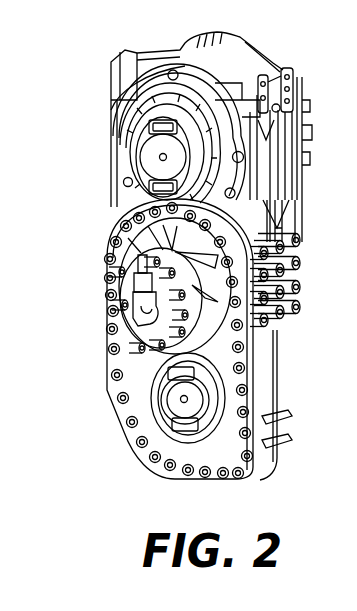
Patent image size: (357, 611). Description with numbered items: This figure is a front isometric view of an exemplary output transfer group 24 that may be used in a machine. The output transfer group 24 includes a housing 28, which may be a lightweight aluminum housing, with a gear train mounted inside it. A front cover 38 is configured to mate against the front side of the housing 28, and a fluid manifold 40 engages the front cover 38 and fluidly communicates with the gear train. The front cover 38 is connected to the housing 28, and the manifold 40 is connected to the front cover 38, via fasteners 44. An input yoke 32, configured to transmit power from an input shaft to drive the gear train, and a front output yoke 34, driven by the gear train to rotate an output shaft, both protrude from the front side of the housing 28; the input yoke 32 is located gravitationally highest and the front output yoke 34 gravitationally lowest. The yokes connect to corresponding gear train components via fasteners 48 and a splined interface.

The output transfer group 24 is at (290, 46).
The housing 28 is at (180, 50).
The input yoke 32 is at (158, 123).
The fasteners 48 is at (160, 157).
The fluid manifold 40 is at (130, 316).
The front output yoke 34 is at (160, 424).
The fasteners 44 is at (170, 474).
The front cover 38 is at (222, 450).